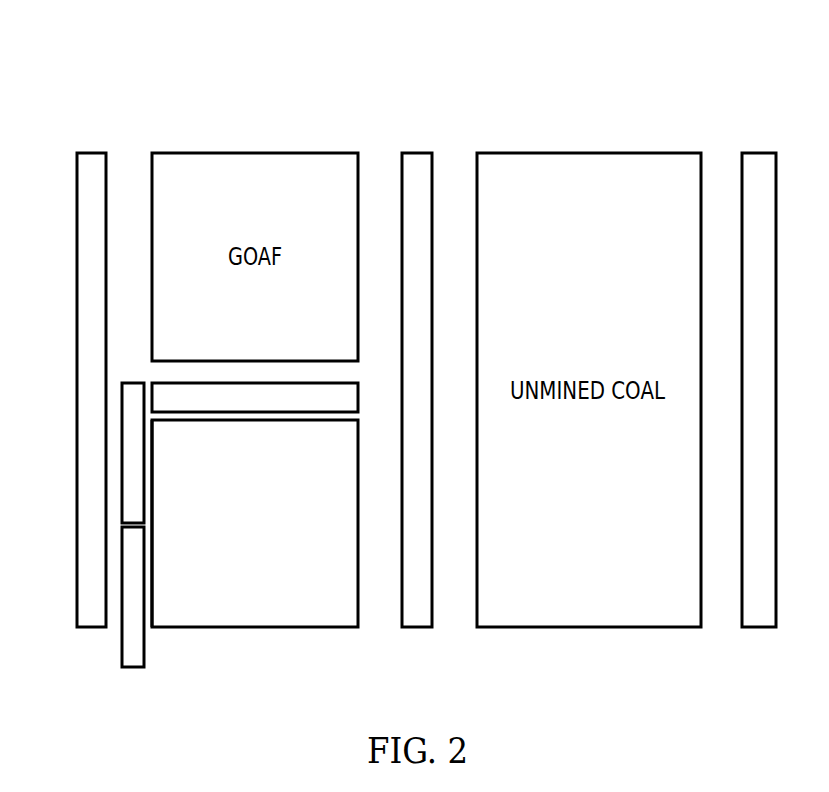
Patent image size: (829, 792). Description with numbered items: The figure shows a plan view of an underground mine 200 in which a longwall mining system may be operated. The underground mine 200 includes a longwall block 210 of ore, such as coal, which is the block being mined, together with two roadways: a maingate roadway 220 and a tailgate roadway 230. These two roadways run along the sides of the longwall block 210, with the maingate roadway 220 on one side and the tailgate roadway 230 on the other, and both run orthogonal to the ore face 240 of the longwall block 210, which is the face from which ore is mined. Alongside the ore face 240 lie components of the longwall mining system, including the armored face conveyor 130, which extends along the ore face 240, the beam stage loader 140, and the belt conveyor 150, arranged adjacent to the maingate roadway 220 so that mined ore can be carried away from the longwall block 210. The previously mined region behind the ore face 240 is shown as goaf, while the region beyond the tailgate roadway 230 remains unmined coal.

The underground mine 200 is at (690, 60).
The maingate roadway 220 is at (126, 254).
The armored face conveyor 130 is at (151, 398).
The beam stage loader 140 is at (121, 455).
The ore face 240 is at (151, 507).
The belt conveyor 150 is at (121, 598).
The longwall block 210 is at (273, 566).
The tailgate roadway 230 is at (381, 166).